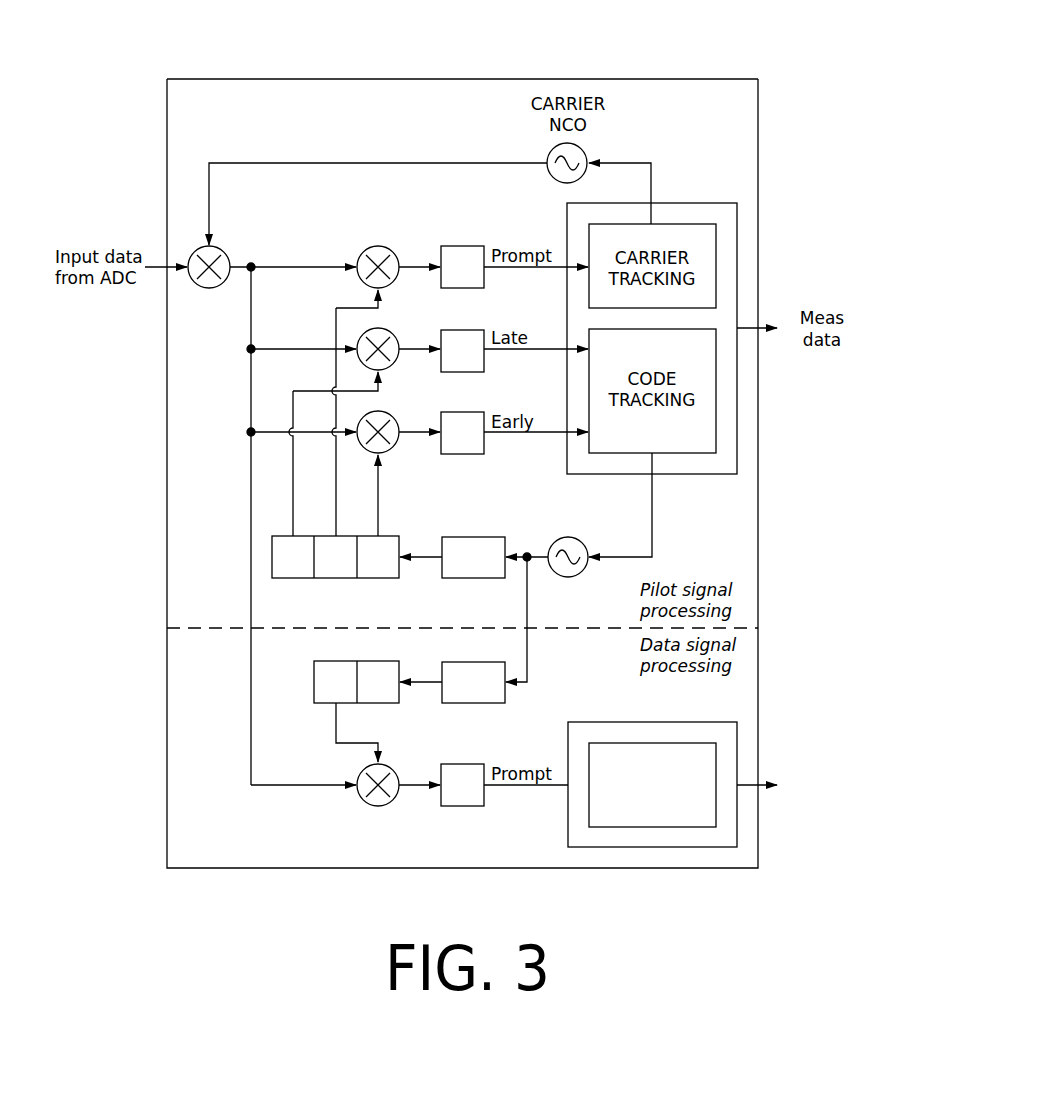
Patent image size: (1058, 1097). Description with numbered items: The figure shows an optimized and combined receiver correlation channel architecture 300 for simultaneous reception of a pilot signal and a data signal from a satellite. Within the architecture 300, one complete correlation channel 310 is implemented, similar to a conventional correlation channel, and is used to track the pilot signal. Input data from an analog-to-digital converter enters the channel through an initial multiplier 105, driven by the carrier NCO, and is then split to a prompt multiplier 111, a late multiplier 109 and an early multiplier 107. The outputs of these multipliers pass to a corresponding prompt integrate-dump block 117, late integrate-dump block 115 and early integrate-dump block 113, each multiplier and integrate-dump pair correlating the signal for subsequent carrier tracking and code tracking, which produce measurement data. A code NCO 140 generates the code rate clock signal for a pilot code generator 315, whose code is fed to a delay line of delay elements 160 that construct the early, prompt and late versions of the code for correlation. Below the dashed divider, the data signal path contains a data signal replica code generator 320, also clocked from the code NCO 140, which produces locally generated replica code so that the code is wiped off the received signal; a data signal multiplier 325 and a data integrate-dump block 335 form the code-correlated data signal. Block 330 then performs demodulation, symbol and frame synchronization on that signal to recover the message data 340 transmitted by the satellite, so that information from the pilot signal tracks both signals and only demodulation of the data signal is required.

The optimized receiver correlation channel architecture 300 is at (143, 136).
The correlation channel 310 is at (388, 95).
The initial multiplier 105 is at (207, 290).
The prompt multiplier 111 is at (374, 246).
The late multiplier 109 is at (384, 332).
The early multiplier 107 is at (362, 452).
The prompt integrate-dump block 117 is at (482, 246).
The late integrate-dump block 115 is at (481, 372).
The early integrate-dump block 113 is at (482, 455).
The code NCO 140 is at (593, 565).
The pilot code generator 315 is at (507, 541).
The data signal replica code generator 320 is at (497, 688).
The delay elements 160 is at (373, 583).
The data signal multiplier 325 is at (375, 806).
The data integrate-dump block 335 is at (470, 806).
The demodulation block 330 is at (710, 835).
The message data 340 is at (832, 757).